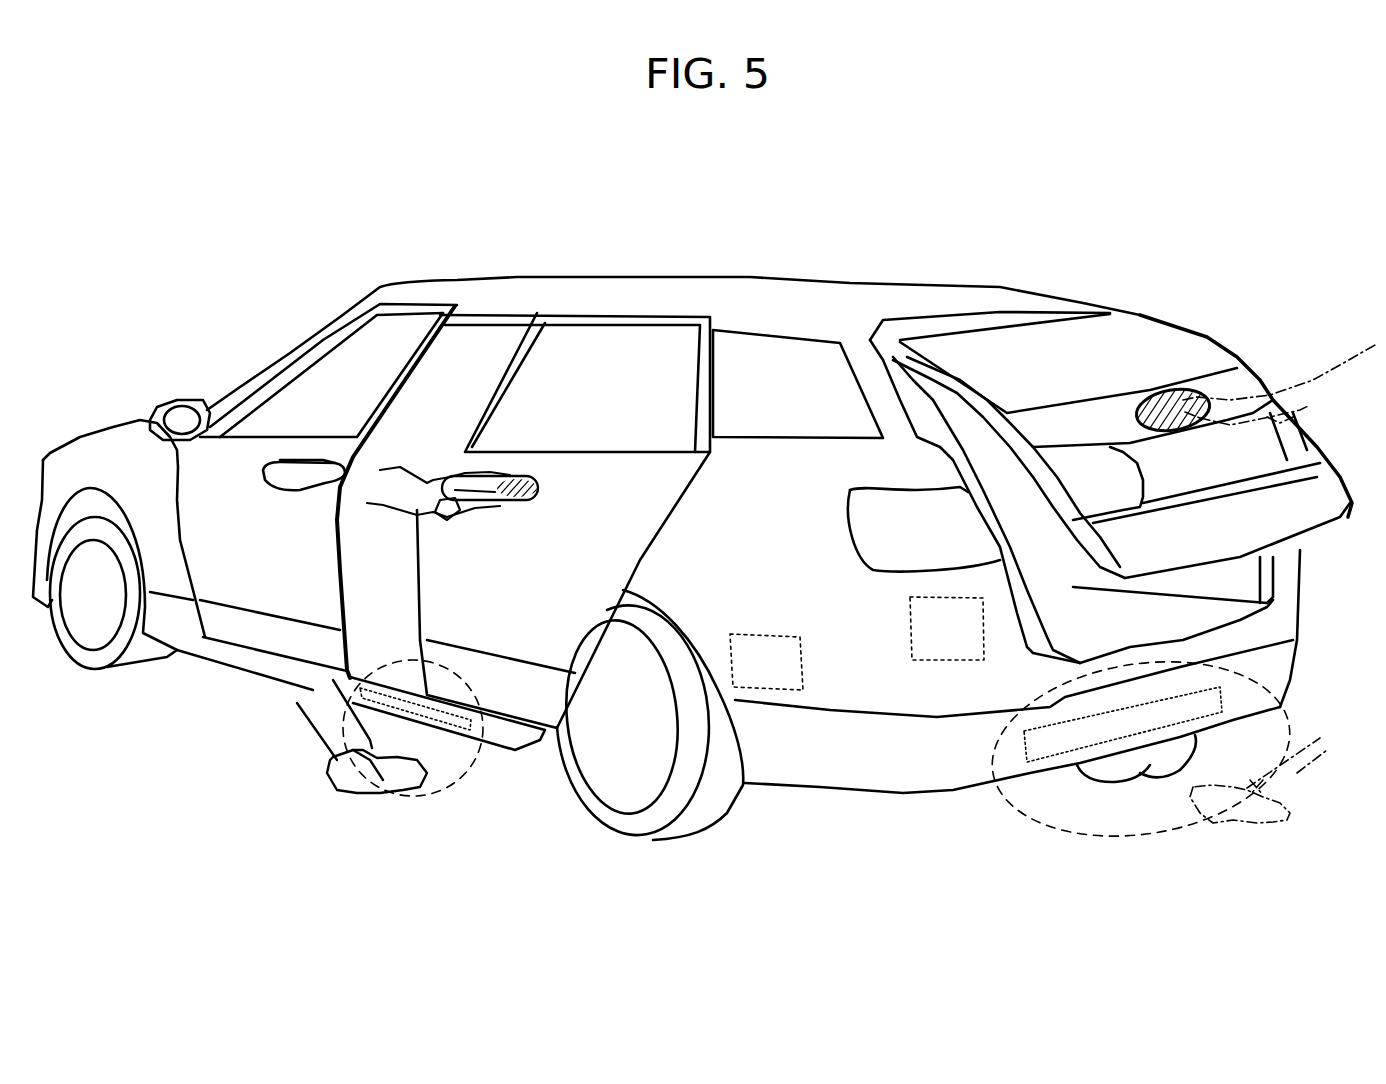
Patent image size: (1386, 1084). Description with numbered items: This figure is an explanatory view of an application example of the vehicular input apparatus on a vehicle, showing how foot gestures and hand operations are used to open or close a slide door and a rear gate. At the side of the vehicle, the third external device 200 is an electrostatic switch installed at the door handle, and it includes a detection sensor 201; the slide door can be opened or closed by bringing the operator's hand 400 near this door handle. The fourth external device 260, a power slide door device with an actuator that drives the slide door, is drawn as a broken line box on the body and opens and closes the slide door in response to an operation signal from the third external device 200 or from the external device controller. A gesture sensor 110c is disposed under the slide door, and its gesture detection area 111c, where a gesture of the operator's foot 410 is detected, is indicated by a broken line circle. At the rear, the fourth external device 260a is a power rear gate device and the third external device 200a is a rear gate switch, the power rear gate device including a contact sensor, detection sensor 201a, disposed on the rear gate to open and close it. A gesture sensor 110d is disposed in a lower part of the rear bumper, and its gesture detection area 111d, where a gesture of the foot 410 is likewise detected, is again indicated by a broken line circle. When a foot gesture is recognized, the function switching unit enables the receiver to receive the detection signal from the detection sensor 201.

The operator's hand 400 is at (395, 487).
The operator's foot 410 is at (315, 708).
The third external device 200 is at (566, 356).
The detection sensor 201 is at (521, 473).
The third external device 200a is at (1204, 347).
The detection sensor 201a is at (1173, 400).
The fourth external device 260 is at (773, 665).
The fourth external device 260a is at (950, 637).
The gesture sensor 110c is at (483, 770).
The gesture detection area 111c is at (423, 797).
The gesture sensor 110d is at (1090, 742).
The gesture detection area 111d is at (1160, 838).